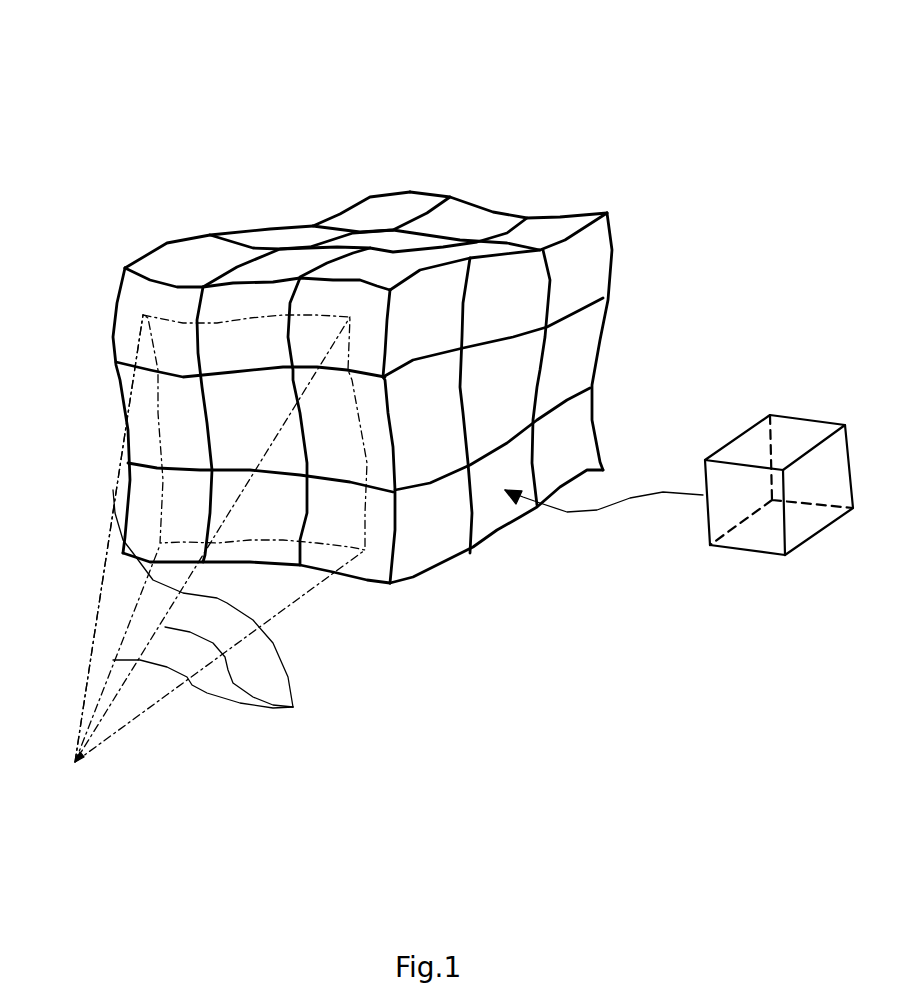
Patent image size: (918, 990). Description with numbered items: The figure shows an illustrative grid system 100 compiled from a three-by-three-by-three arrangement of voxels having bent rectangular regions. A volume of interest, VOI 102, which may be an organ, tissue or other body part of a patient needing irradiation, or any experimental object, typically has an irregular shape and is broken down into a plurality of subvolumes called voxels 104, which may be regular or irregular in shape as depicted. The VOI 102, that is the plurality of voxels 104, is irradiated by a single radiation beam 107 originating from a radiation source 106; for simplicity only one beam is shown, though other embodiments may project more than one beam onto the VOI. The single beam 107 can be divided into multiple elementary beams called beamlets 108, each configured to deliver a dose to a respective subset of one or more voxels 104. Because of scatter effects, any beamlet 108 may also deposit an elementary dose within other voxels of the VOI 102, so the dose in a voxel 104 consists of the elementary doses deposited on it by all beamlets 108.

The volumetric rendering system 100 is at (680, 83).
The VOI 102 is at (218, 220).
The voxels 104 is at (500, 385).
The radiation source 106 is at (73, 772).
The radiation beam 107 is at (137, 703).
The beamlets 108 is at (327, 592).